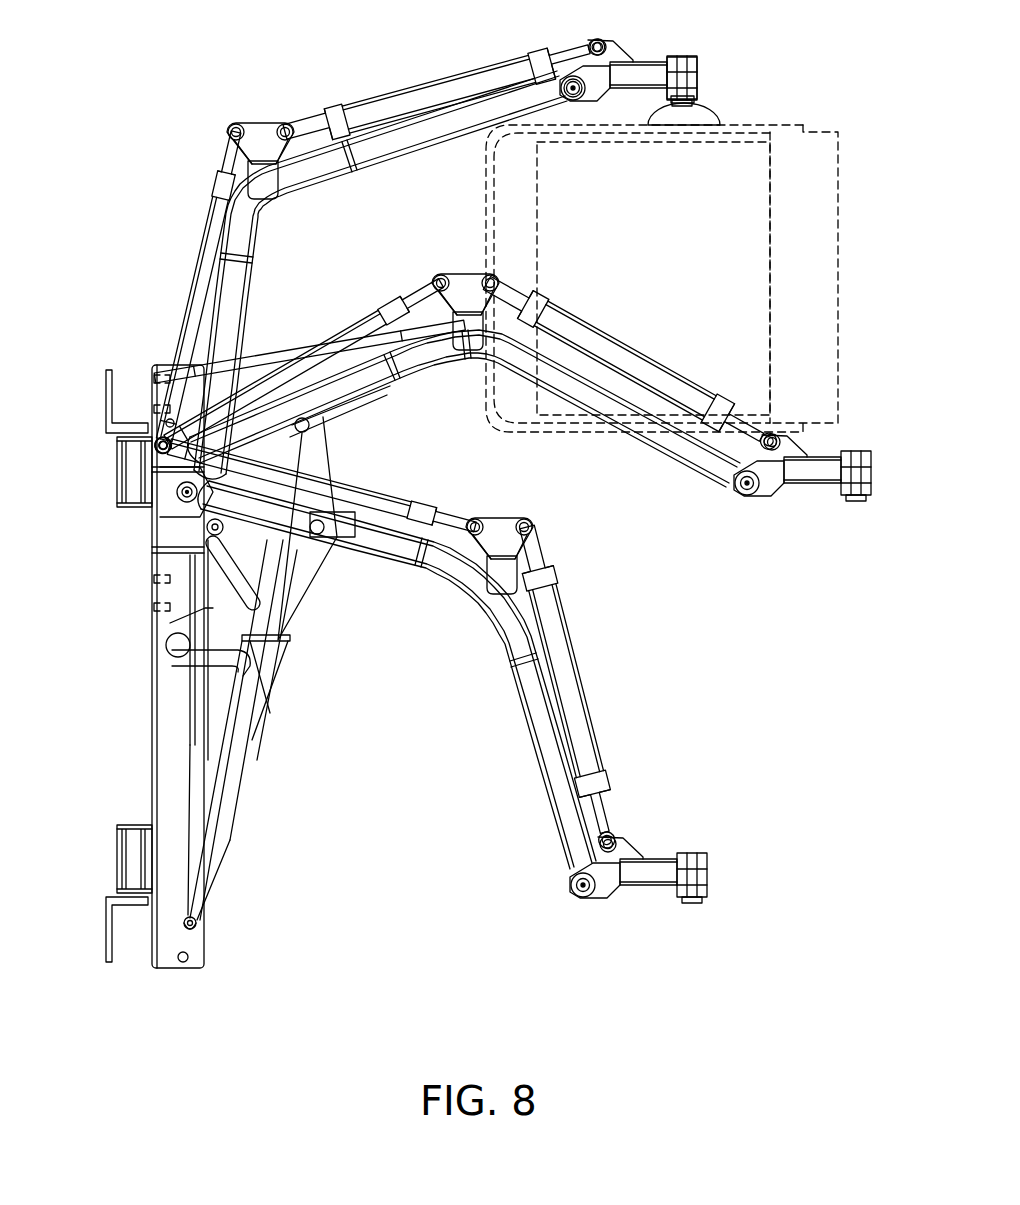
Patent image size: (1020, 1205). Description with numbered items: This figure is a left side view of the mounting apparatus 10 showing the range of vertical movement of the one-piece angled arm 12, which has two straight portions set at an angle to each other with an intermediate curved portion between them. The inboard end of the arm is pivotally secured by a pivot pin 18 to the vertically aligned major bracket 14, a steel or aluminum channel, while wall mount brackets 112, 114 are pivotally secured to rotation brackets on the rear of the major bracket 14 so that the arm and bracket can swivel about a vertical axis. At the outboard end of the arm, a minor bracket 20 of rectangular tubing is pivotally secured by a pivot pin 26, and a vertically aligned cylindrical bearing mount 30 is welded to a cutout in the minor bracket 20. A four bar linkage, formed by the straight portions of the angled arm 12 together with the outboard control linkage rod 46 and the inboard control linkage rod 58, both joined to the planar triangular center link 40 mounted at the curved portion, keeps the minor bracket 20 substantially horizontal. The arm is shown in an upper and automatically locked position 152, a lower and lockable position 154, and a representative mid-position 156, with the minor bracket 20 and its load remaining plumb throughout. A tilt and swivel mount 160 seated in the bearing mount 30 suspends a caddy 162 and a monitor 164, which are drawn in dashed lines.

The lifting apparatus 10 is at (145, 92).
The angled arm 12 is at (412, 163).
The major bracket 14 is at (137, 718).
The pivot pin 18 is at (155, 510).
The minor bracket 20 is at (650, 63).
The pivot pin 26 is at (534, 58).
The cylindrical bearing mount 30 is at (713, 59).
The center link 40 is at (251, 145).
The outboard control linkage rod 46 is at (446, 92).
The inboard control linkage rod 58 is at (189, 292).
The wall mount bracket 112 is at (106, 397).
The wall mount bracket 114 is at (106, 950).
The upper and automatically locked position 152 is at (767, 62).
The lower and lockable position 154 is at (725, 879).
The mid-position 156 is at (855, 545).
The tilt and swivel mount 160 is at (720, 107).
The caddy 162 is at (674, 262).
The monitor 164 is at (840, 274).